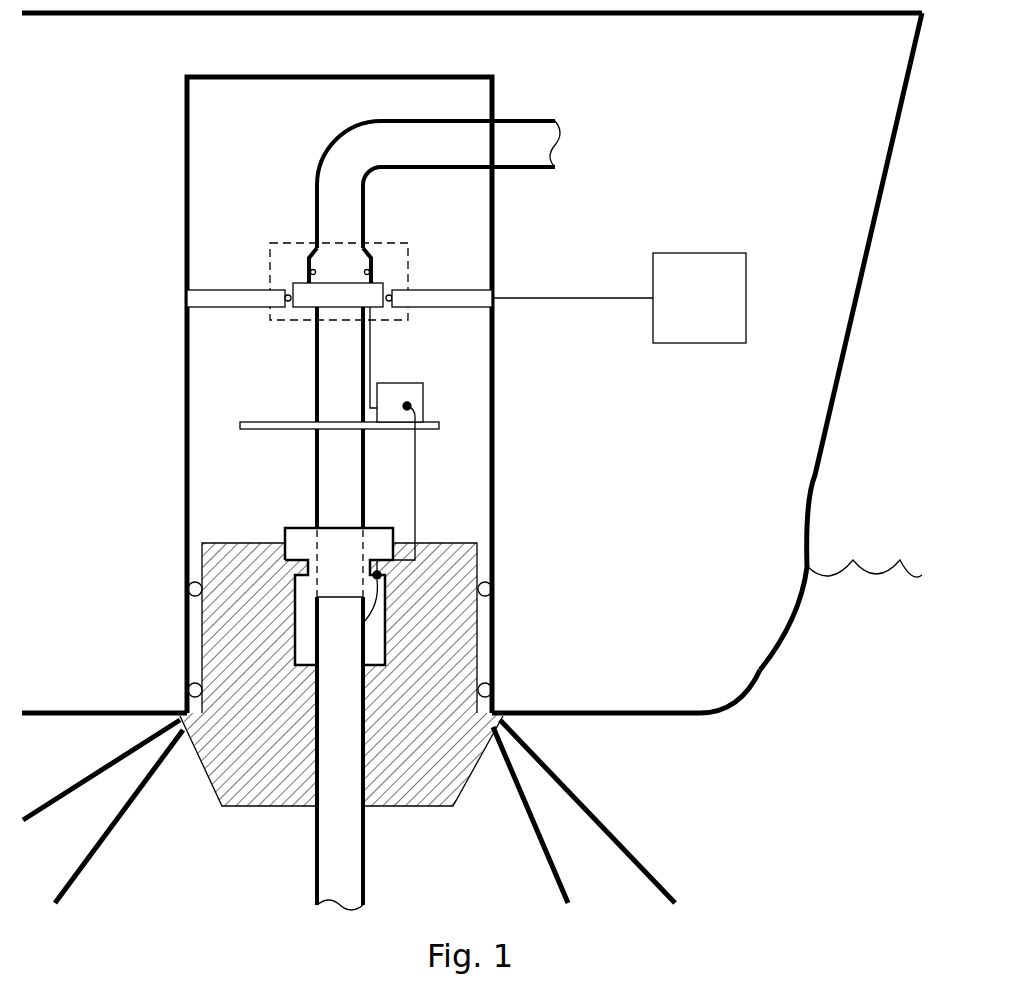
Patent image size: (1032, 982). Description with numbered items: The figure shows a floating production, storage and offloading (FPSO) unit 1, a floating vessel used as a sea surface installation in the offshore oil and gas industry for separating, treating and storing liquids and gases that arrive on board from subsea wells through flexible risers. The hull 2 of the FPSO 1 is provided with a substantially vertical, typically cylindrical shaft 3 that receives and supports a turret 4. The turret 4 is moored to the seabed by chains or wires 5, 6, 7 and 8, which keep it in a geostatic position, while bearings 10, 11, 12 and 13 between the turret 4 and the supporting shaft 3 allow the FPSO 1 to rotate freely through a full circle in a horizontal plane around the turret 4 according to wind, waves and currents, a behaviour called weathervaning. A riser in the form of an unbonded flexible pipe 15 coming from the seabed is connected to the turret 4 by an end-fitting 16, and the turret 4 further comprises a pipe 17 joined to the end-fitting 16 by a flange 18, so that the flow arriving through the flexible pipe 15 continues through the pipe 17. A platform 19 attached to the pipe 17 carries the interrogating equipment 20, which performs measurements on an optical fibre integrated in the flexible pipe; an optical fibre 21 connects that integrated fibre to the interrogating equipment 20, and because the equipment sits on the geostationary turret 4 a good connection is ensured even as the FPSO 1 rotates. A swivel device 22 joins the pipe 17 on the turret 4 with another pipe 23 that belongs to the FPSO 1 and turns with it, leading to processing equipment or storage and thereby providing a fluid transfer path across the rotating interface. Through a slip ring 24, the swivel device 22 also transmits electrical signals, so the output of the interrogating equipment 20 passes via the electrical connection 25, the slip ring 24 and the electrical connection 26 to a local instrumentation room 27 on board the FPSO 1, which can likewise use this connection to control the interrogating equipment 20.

The floating production, storage and offloading (FPSO) unit 1 is at (815, 658).
The hull 2 is at (843, 372).
The shaft 3 is at (183, 204).
The turret 4 is at (217, 820).
The chain or wire 5 is at (78, 783).
The chain or wire 6 is at (98, 853).
The chain or wire 7 is at (537, 837).
The chain or wire 8 is at (570, 788).
The bearing 10 is at (186, 588).
The bearing 11 is at (186, 689).
The bearing 12 is at (495, 588).
The bearing 13 is at (495, 689).
The unbonded flexible pipe 15 is at (363, 857).
The end-fitting 16 is at (293, 552).
The pipe 17 is at (313, 497).
The flange 18 is at (377, 528).
The platform 19 is at (260, 420).
The interrogating equipment 20 is at (423, 402).
The optical fibre 21 is at (417, 513).
The swivel device 22 is at (397, 240).
The pipe 23 is at (322, 158).
The slip ring 24 is at (288, 305).
The electrical connection 25 is at (370, 352).
The electrical connection 26 is at (532, 297).
The local instrumentation room 27 is at (717, 250).